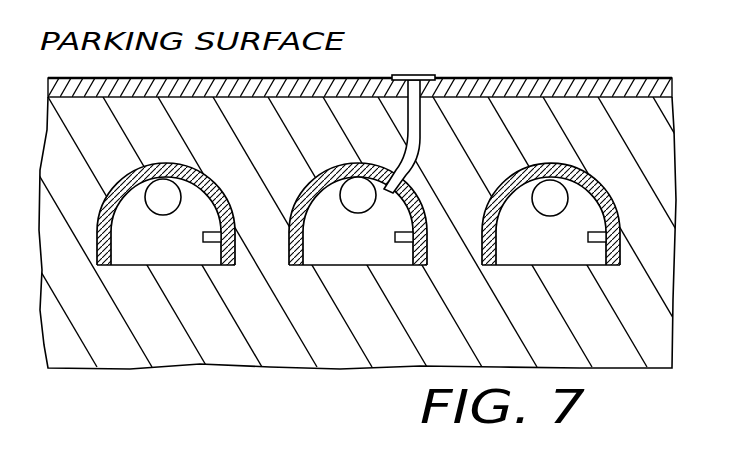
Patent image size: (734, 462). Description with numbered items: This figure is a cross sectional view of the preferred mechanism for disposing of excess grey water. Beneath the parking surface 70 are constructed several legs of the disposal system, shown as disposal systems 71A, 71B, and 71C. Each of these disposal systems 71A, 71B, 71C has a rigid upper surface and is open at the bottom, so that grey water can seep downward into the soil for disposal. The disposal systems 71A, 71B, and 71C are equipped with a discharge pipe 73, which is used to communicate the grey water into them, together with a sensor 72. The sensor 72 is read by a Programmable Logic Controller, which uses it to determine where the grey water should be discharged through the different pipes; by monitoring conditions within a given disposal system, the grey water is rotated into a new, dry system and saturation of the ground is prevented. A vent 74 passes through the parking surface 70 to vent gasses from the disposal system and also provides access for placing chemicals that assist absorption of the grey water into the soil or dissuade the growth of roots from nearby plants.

The parking surface 70 is at (115, 78).
The disposal system 71A is at (147, 248).
The disposal system 71B is at (382, 212).
The disposal system 71C is at (577, 202).
The sensor 72 is at (401, 244).
The discharge pipe 73 is at (143, 176).
The vent 74 is at (437, 76).